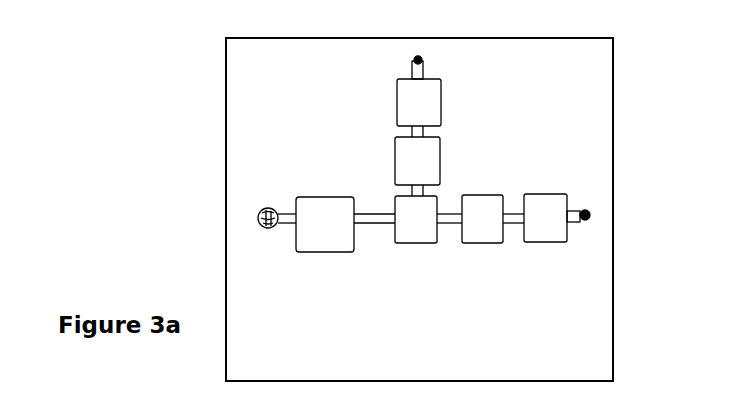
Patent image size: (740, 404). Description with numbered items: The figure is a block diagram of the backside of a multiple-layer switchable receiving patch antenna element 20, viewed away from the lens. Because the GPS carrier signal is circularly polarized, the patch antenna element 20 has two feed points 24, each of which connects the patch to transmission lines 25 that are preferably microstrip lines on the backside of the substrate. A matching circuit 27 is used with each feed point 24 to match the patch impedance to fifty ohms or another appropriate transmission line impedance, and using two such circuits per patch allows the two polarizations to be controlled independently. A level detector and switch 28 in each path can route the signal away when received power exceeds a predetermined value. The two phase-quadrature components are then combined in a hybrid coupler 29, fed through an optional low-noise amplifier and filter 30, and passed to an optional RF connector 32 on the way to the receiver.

The patch antenna element 20 is at (600, 109).
The feed point 24 is at (419, 57).
The transmission line 25 is at (371, 218).
The matching circuit 27 is at (430, 100).
The level detector and switch 28 is at (430, 158).
The hybrid coupler 29 is at (417, 230).
The low-noise amplifier and filter 30 is at (328, 197).
The RF connector 32 is at (258, 218).